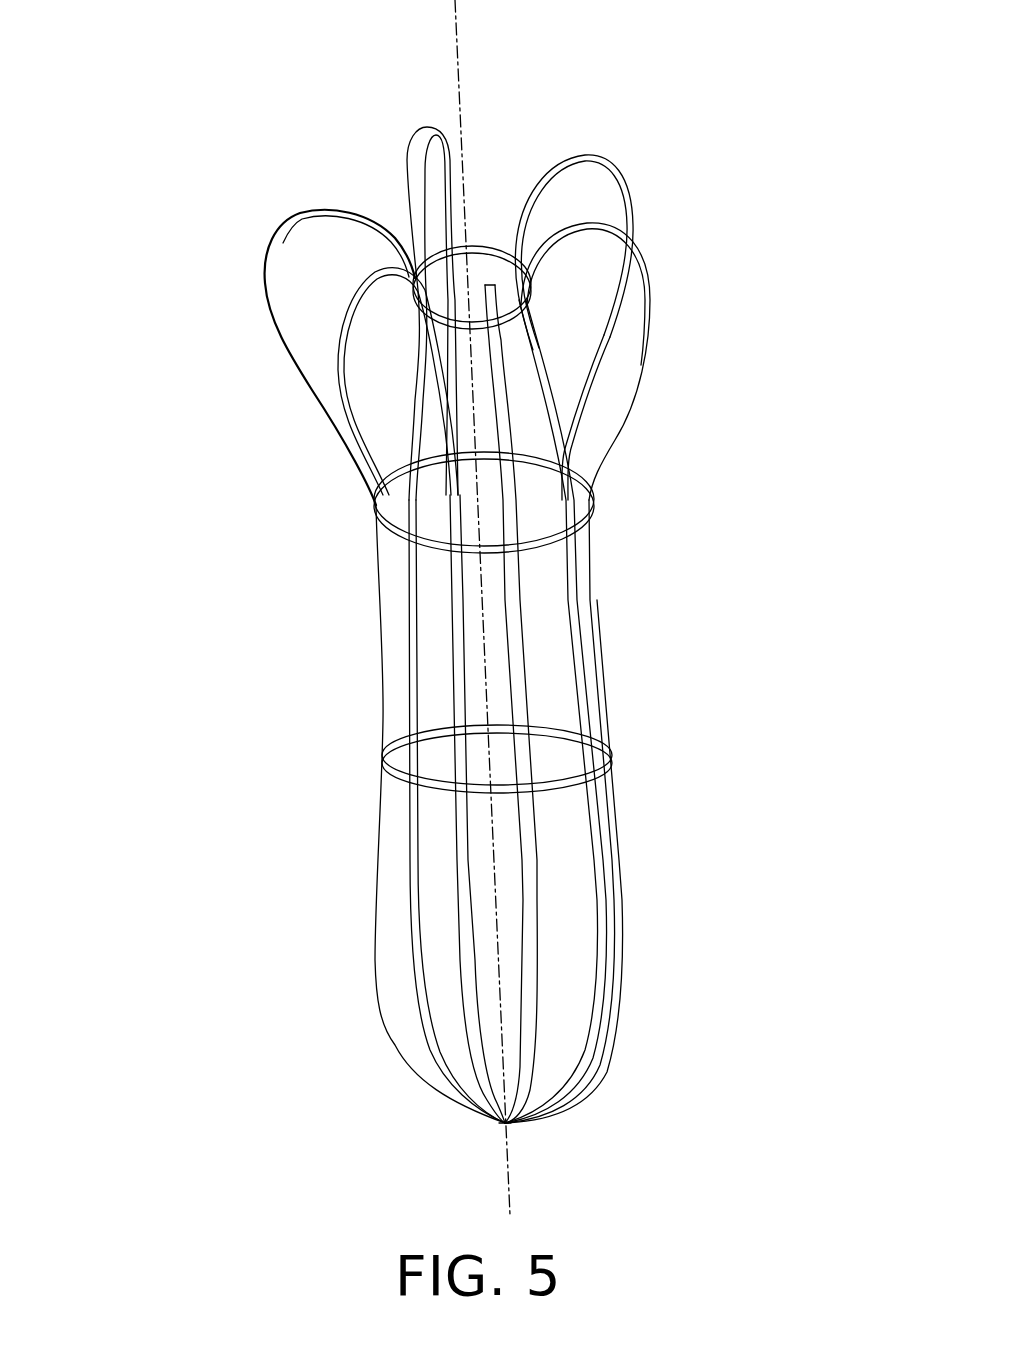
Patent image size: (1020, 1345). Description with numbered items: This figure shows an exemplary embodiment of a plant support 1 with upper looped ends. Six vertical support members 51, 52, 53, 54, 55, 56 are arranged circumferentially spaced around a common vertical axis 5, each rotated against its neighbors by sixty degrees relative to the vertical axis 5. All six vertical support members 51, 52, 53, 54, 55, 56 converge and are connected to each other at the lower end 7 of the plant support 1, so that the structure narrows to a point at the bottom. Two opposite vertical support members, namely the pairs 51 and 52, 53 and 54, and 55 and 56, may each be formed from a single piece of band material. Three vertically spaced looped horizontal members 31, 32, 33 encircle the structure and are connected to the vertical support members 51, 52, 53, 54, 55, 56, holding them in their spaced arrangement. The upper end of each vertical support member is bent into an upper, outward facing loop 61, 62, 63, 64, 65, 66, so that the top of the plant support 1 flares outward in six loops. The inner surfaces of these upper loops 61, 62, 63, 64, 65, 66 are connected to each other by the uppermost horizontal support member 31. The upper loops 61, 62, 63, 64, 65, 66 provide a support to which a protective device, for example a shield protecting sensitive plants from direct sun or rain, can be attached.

The plant support 1 is at (682, 172).
The common vertical axis 5 is at (462, 80).
The lower end 7 is at (503, 1125).
The uppermost horizontal support member 31 is at (417, 307).
The looped horizontal member 32 is at (412, 474).
The looped horizontal member 33 is at (413, 743).
The vertical support member 51 is at (378, 990).
The vertical support member 52 is at (622, 962).
The vertical support member 53 is at (450, 1080).
The vertical support member 54 is at (600, 1000).
The vertical support member 55 is at (483, 1082).
The vertical support member 56 is at (530, 1012).
The upper loop 61 is at (264, 288).
The upper loop 62 is at (650, 306).
The upper loop 63 is at (357, 287).
The upper loop 64 is at (613, 323).
The upper loop 65 is at (417, 183).
The upper loop 66 is at (486, 285).